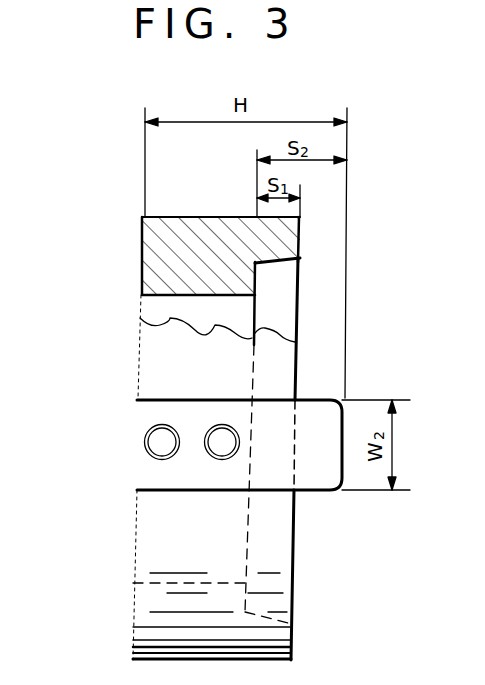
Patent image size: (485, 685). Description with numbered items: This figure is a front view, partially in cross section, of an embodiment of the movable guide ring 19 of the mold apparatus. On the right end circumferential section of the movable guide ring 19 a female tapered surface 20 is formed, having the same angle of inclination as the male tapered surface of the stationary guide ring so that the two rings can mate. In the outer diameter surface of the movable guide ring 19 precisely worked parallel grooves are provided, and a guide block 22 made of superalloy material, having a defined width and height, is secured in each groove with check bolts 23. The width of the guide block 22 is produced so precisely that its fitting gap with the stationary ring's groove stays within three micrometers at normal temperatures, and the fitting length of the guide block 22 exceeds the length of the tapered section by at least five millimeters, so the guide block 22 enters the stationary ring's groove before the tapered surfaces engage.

The movable guide ring 19 is at (224, 210).
The female tapered surface 20 is at (275, 262).
The guide block 22 is at (313, 477).
The check bolt 23 is at (228, 442).